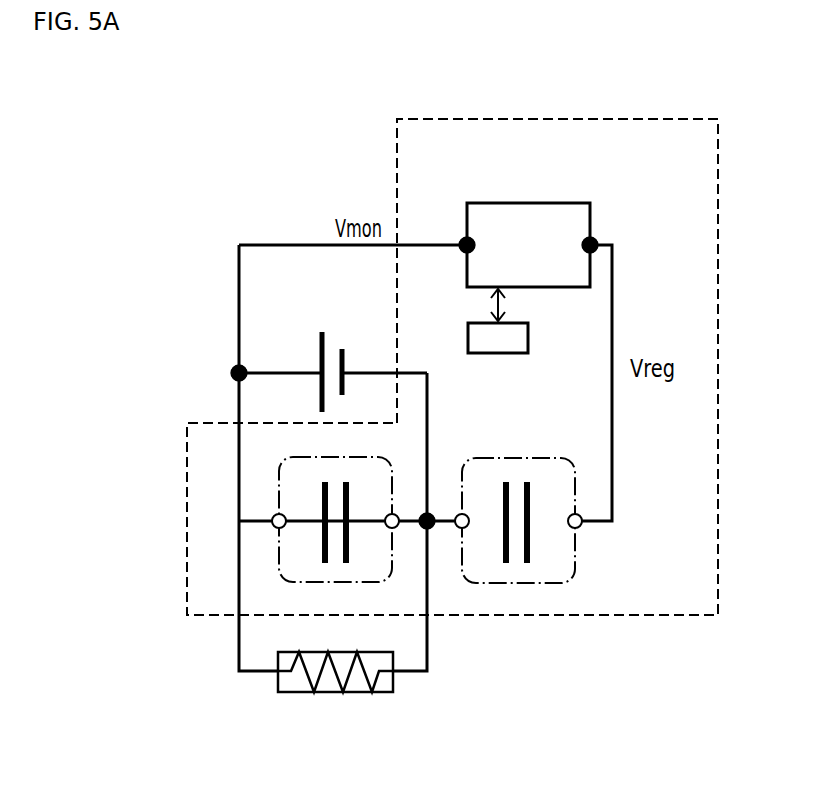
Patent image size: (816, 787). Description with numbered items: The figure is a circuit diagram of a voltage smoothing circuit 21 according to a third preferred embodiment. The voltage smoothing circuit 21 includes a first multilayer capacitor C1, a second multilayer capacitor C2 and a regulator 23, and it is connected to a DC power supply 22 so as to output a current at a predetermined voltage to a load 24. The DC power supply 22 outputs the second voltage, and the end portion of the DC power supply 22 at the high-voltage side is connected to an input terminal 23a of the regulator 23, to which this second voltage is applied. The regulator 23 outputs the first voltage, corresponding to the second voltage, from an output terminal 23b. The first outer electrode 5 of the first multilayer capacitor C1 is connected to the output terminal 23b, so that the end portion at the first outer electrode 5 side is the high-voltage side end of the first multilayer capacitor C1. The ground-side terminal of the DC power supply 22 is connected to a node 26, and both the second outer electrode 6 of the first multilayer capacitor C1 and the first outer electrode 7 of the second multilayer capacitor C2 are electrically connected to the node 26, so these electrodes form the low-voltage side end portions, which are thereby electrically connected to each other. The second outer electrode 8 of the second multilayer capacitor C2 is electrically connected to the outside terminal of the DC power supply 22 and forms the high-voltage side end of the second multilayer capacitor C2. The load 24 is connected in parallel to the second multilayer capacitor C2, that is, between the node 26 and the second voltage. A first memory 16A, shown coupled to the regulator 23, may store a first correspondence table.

The voltage smoothing circuit 21 is at (420, 116).
The DC power supply 22 is at (318, 350).
The regulator 23 is at (535, 201).
The input terminal 23a is at (460, 240).
The output terminal 23b is at (596, 240).
The first memory 16A is at (528, 337).
The load 24 is at (340, 693).
The node 26 is at (430, 515).
The first outer electrode 5 is at (581, 527).
The second outer electrode 6 is at (460, 530).
The first outer electrode 7 is at (393, 513).
The second outer electrode 8 is at (279, 529).
The first multilayer capacitor C1 is at (578, 491).
The second multilayer capacitor C2 is at (278, 485).